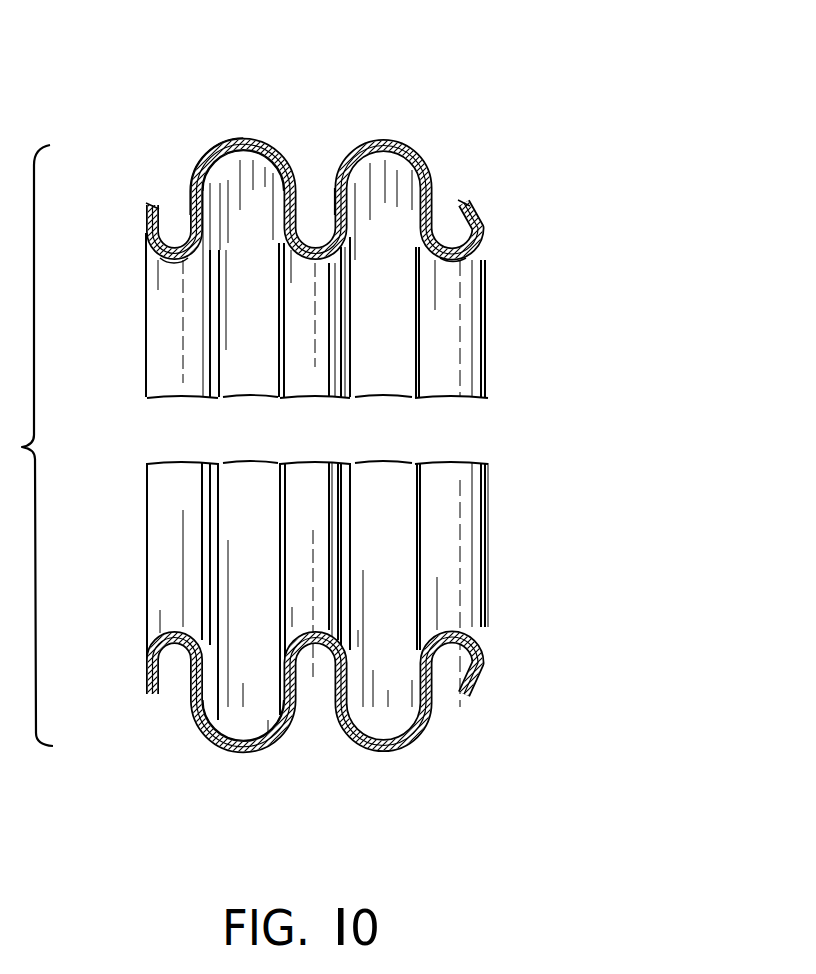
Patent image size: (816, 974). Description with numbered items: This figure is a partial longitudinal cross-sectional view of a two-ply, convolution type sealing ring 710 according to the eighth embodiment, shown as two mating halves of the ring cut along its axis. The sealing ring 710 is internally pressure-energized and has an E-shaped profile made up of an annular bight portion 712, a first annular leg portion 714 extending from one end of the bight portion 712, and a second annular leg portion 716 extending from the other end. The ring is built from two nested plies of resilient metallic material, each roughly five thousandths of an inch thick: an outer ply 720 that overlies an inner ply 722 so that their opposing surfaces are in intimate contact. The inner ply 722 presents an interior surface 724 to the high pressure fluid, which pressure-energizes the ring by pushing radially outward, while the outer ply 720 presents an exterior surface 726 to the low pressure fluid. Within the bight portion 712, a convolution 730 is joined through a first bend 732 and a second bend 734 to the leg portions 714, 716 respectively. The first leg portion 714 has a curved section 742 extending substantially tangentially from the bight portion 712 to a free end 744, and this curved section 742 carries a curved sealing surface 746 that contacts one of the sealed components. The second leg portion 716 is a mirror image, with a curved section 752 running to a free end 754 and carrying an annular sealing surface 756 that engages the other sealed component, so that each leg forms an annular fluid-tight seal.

The sealing ring 710 is at (538, 173).
The bight portion 712 is at (284, 140).
The first annular leg portion 714 is at (141, 277).
The second annular leg portion 716 is at (494, 313).
The outer ply 720 is at (215, 134).
The inner ply 722 is at (191, 164).
The interior surface 724 is at (355, 222).
The exterior surface 726 is at (337, 182).
The convolution 730 is at (317, 222).
The first bend 732 is at (243, 140).
The second bend 734 is at (385, 130).
The curved section 742 is at (173, 266).
The free end 744 is at (168, 204).
The curved sealing surface 746 is at (147, 232).
The curved section 752 is at (448, 262).
The free end 754 is at (462, 196).
The annular sealing surface 756 is at (487, 228).